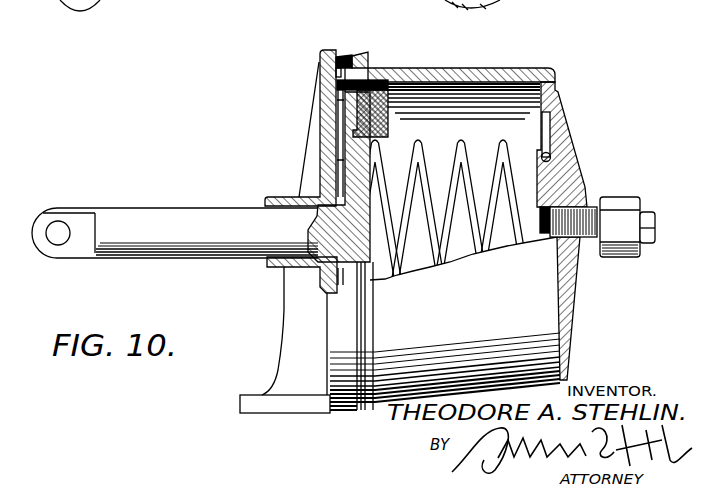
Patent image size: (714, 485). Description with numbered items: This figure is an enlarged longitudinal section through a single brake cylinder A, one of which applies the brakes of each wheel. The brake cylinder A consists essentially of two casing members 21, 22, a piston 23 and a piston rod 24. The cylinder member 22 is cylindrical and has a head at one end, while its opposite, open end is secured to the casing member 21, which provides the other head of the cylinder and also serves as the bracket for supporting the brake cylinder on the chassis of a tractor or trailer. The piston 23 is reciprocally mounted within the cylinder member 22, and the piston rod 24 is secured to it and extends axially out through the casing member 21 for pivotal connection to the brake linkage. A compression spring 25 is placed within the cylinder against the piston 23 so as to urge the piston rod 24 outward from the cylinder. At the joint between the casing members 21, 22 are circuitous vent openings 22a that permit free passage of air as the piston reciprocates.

The casing member 21 is at (320, 60).
The cylinder member 22 is at (513, 64).
The circuitous vent openings 22a is at (333, 56).
The piston 23 is at (388, 80).
The piston rod 24 is at (147, 213).
The compression spring 25 is at (465, 145).
The brake cylinder A is at (317, 110).